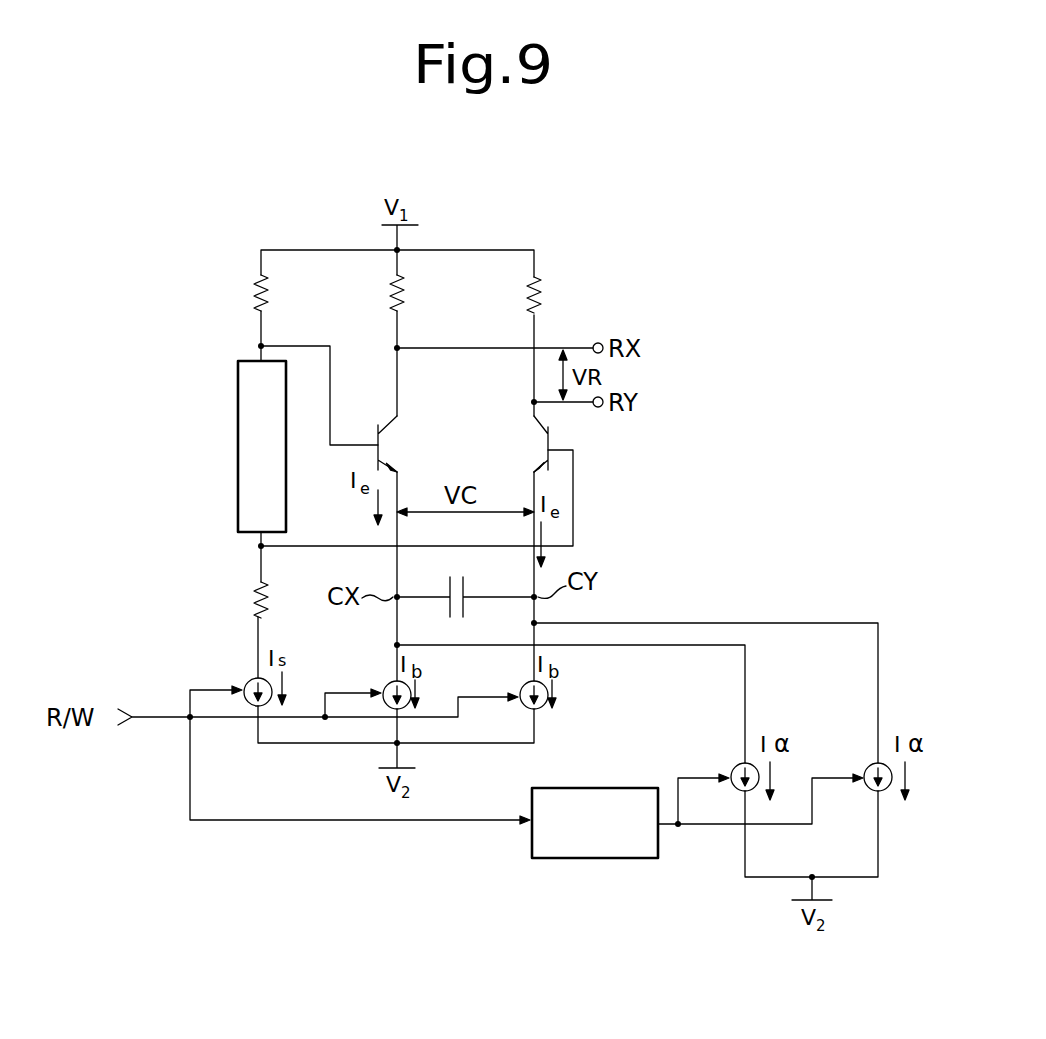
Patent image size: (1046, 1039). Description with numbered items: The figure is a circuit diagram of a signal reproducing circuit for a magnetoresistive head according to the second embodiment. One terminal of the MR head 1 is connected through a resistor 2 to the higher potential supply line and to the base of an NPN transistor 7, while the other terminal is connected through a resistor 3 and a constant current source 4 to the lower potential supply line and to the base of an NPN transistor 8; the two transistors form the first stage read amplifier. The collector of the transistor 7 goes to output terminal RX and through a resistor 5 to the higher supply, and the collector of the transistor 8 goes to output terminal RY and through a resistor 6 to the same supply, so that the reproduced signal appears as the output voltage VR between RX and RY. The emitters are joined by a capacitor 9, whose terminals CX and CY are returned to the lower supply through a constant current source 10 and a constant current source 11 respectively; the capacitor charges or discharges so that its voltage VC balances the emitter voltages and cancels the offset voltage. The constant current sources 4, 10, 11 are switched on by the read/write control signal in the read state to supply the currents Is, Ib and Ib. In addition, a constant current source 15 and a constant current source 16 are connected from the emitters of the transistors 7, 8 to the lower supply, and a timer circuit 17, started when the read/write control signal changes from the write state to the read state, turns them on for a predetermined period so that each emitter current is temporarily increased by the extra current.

The MR head 1 is at (238, 453).
The resistor 2 is at (258, 292).
The resistor 3 is at (255, 587).
The constant current source 4 is at (246, 681).
The resistor 5 is at (390, 294).
The resistor 6 is at (528, 294).
The NPN transistor 7 is at (400, 452).
The NPN transistor 8 is at (530, 448).
The capacitor 9 is at (468, 586).
The constant current source 10 is at (385, 684).
The constant current source 11 is at (521, 688).
The constant current source 15 is at (736, 766).
The constant current source 16 is at (869, 766).
The timer circuit 17 is at (641, 862).